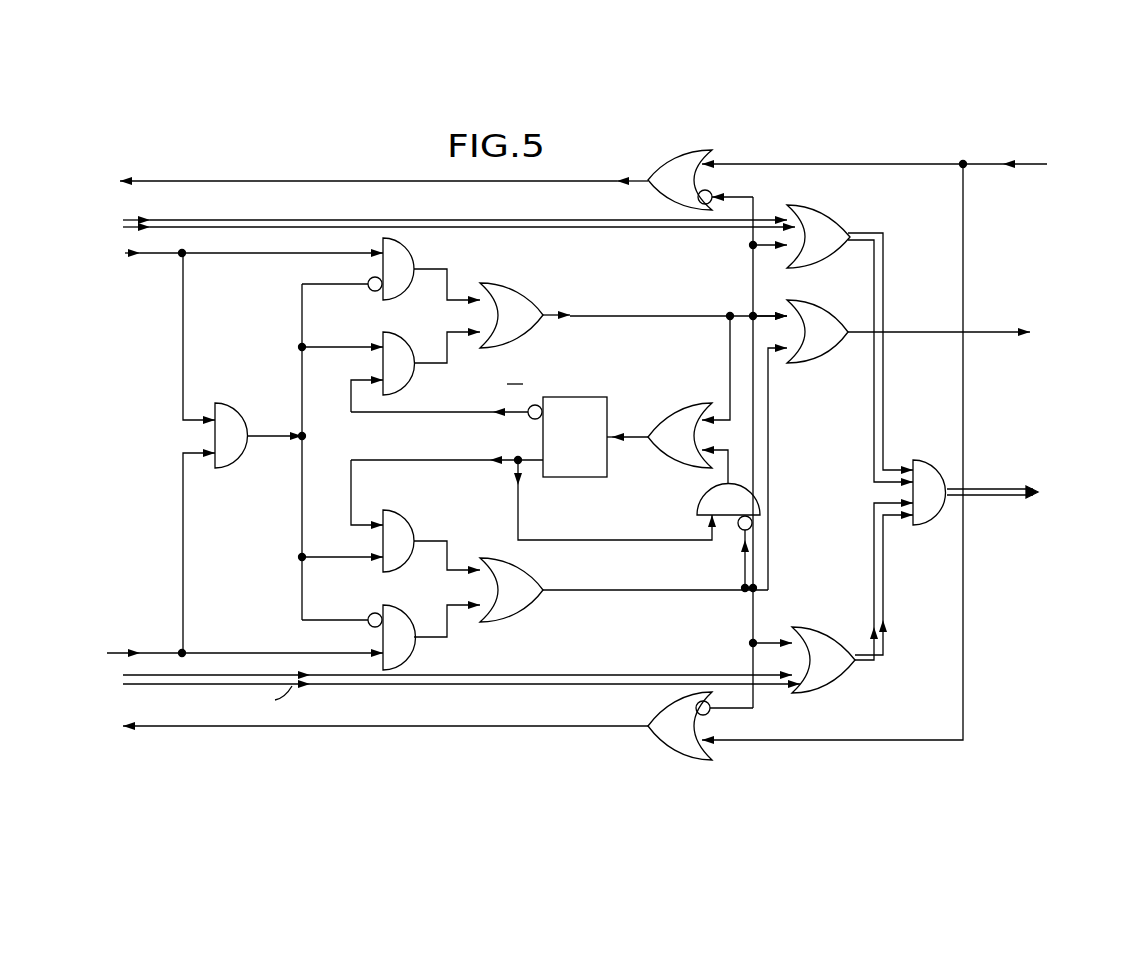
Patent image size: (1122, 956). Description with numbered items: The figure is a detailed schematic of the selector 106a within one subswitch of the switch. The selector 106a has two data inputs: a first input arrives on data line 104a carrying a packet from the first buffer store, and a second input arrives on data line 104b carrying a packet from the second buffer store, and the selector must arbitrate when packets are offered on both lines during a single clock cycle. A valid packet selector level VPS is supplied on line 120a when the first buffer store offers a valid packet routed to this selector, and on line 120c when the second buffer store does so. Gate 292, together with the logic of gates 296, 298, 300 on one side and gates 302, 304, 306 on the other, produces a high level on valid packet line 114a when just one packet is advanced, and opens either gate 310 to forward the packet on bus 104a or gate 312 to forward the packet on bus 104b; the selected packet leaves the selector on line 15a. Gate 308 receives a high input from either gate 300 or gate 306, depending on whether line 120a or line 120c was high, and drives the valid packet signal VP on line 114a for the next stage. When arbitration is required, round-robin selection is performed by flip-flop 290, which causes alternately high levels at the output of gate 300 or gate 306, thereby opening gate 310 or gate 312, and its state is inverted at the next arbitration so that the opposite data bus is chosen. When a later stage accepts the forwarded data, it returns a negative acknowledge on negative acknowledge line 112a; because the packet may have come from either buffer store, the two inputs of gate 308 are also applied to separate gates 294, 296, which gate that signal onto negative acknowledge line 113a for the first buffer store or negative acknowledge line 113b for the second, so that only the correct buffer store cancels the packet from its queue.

The selector 106a is at (112, 150).
The negative acknowledge line 113a is at (290, 183).
The data line 104a is at (123, 229).
The line 120a is at (130, 255).
The line 120c is at (125, 650).
The data line 104b is at (123, 676).
The negative acknowledge line 113b is at (413, 728).
The negative acknowledge line 112a is at (1033, 163).
The line 114a is at (985, 336).
The line 15a is at (995, 485).
The flip-flop 290 is at (585, 396).
The gate 292 is at (235, 403).
The gate 294 is at (672, 158).
The gate 296 is at (412, 254).
The gate 298 is at (422, 330).
The gate 300 is at (520, 293).
The gate 302 is at (413, 522).
The gate 304 is at (402, 613).
The gate 306 is at (530, 582).
The gate 308 is at (805, 358).
The gate 310 is at (831, 219).
The gate 312 is at (832, 688).